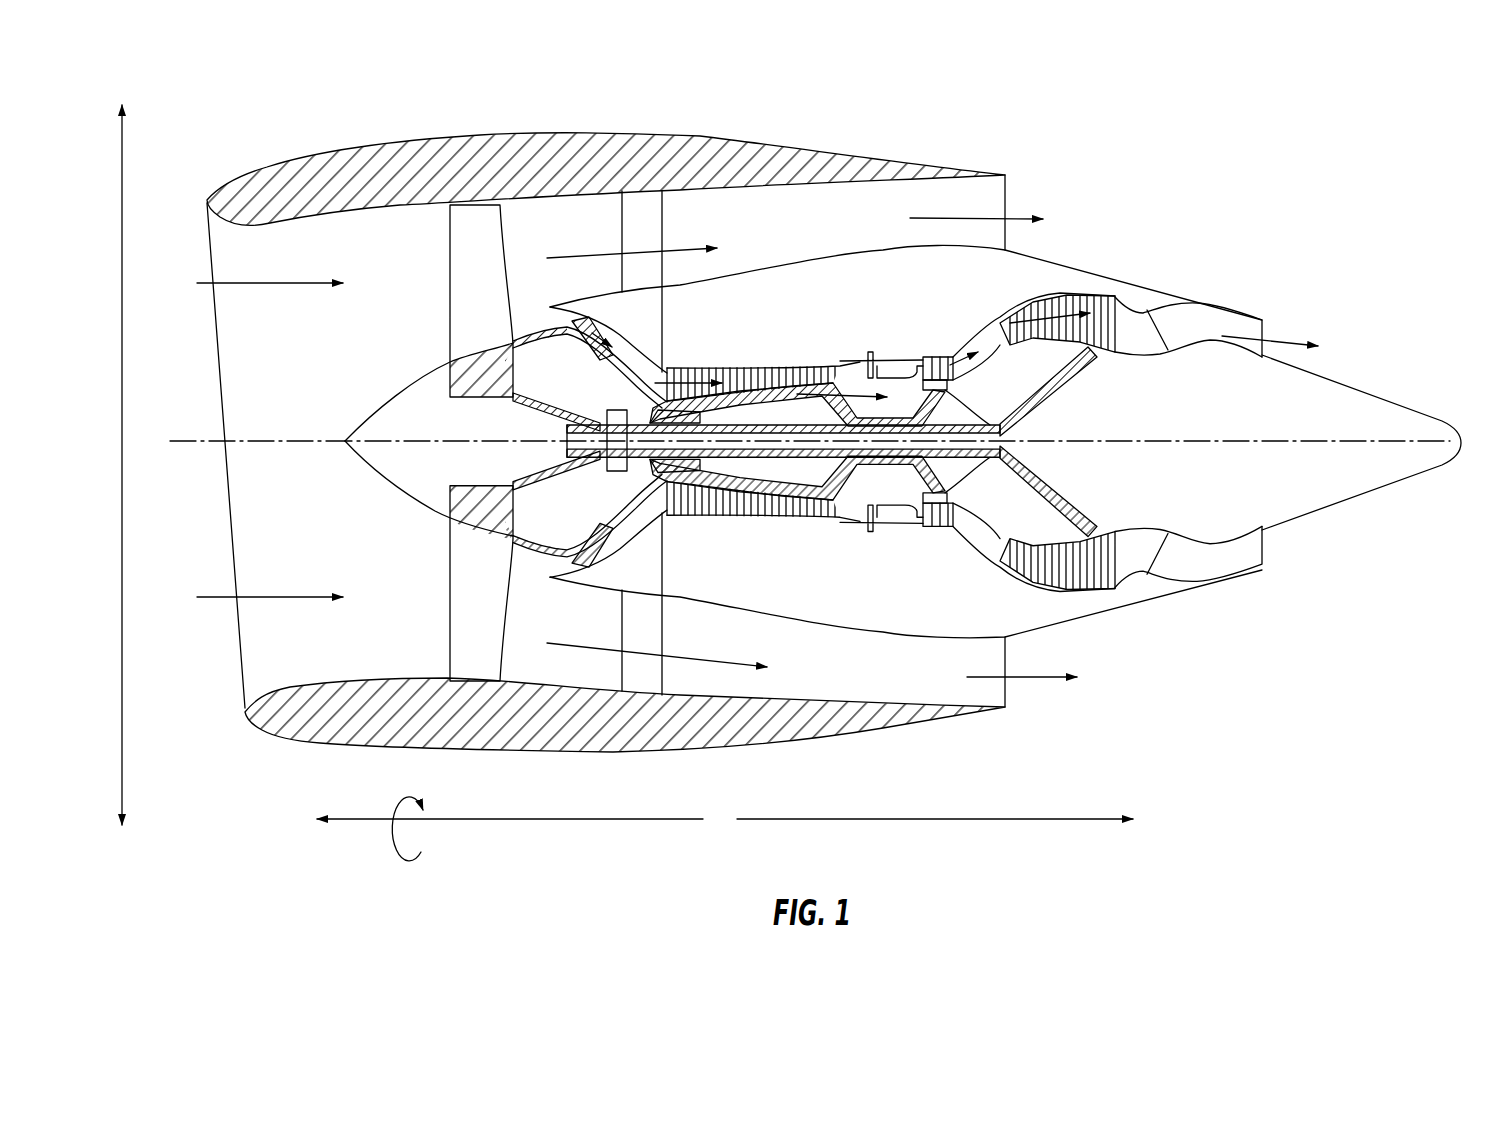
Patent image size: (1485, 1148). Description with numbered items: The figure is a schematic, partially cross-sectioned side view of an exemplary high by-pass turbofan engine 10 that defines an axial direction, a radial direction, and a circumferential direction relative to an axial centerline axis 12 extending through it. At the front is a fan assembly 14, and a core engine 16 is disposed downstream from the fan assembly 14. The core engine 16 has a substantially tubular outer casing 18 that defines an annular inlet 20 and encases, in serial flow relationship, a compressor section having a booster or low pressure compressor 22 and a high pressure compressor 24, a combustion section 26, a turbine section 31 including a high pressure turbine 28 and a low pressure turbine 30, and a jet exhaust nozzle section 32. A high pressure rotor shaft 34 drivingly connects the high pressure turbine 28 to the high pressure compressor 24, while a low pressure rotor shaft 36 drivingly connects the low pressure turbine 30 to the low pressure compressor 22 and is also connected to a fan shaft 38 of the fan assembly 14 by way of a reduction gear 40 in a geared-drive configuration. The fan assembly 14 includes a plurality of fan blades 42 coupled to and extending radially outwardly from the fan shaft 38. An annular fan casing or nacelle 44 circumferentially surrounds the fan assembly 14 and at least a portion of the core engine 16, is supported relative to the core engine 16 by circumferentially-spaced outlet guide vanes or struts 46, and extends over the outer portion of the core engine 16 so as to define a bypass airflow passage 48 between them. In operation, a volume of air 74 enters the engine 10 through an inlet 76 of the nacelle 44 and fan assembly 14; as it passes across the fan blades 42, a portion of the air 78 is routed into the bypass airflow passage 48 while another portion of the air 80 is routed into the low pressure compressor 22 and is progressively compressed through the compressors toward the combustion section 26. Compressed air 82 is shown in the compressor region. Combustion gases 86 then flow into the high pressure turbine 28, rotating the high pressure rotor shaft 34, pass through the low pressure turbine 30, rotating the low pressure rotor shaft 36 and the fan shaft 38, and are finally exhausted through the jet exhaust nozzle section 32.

The high by-pass turbofan engine 10 is at (1168, 153).
The axial centerline axis 12 is at (1194, 441).
The fan assembly 14 is at (518, 233).
The core engine 16 is at (883, 238).
The outer casing 18 is at (840, 627).
The annular inlet 20 is at (553, 565).
The low pressure compressor 22 is at (613, 530).
The high pressure compressor 24 is at (697, 504).
The combustion section 26 is at (890, 516).
The high pressure turbine 28 is at (952, 540).
The low pressure turbine 30 is at (1100, 602).
The turbine section 31 is at (954, 556).
The jet exhaust nozzle section 32 is at (1165, 565).
The high pressure rotor shaft 34 is at (943, 408).
The low pressure rotor shaft 36 is at (1050, 400).
The fan shaft 38 is at (513, 404).
The reduction gear 40 is at (612, 406).
The fan blades 42 is at (467, 237).
The nacelle 44 is at (455, 140).
The outlet guide vanes 46 is at (652, 223).
The bypass airflow passage 48 is at (797, 226).
The volume of air 74 is at (245, 286).
The inlet 76 is at (317, 628).
The bypass air 78 is at (607, 252).
The core air 80 is at (540, 320).
The compressed air 82 is at (672, 370).
The combustion gases 86 is at (1050, 310).